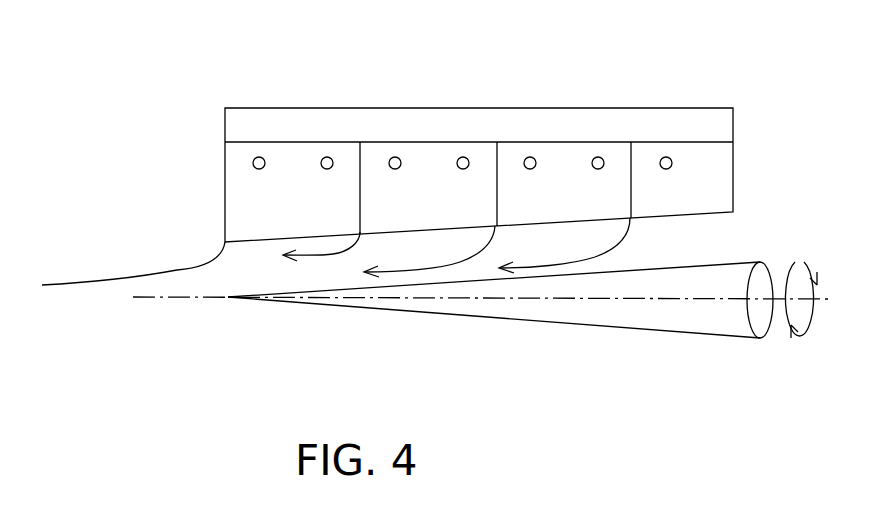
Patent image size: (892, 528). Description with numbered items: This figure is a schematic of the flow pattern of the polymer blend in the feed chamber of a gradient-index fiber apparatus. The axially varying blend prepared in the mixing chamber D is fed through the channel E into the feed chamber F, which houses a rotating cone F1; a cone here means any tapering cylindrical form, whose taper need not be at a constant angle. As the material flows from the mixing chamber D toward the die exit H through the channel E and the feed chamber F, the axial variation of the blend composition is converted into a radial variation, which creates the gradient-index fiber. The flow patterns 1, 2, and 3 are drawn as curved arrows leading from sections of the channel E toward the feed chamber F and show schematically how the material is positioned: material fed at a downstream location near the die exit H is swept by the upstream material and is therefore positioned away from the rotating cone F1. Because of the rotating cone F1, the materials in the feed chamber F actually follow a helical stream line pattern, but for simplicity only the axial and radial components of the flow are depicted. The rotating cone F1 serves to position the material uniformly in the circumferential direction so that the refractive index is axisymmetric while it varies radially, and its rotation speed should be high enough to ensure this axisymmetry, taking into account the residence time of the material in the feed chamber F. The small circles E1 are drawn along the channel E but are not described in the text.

The mixing chamber D is at (412, 130).
The channel E is at (247, 210).
The detector hole E1 is at (255, 158).
The die exit H is at (173, 280).
The feed chamber F is at (287, 277).
The rotating cone F1 is at (556, 318).
The flow pattern 1 is at (564, 234).
The flow pattern 2 is at (429, 238).
The flow pattern 3 is at (321, 231).